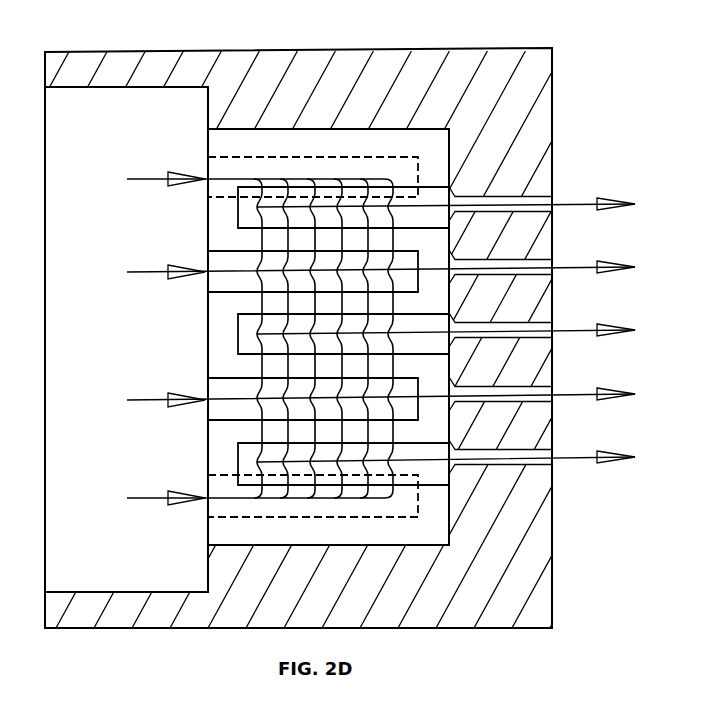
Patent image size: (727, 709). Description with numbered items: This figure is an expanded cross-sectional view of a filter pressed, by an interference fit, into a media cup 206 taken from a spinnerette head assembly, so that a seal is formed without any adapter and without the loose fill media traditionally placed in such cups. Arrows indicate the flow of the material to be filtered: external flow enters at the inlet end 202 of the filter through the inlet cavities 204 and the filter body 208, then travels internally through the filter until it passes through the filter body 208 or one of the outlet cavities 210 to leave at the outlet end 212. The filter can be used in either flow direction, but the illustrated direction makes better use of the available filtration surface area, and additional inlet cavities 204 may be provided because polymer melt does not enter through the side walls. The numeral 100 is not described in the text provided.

The microfluidic device 100 is at (326, 128).
The inlet end 202 is at (207, 231).
The inlet cavities 204 is at (217, 281).
The media cup 206 is at (413, 607).
The filter body 208 is at (217, 340).
The outlet cavities 210 is at (430, 197).
The outlet end 212 is at (430, 262).